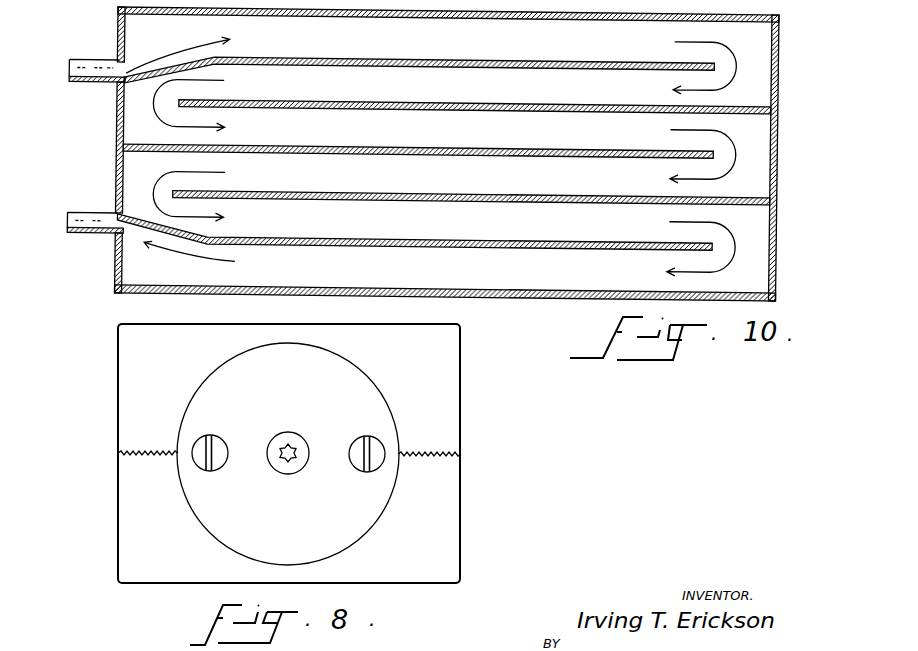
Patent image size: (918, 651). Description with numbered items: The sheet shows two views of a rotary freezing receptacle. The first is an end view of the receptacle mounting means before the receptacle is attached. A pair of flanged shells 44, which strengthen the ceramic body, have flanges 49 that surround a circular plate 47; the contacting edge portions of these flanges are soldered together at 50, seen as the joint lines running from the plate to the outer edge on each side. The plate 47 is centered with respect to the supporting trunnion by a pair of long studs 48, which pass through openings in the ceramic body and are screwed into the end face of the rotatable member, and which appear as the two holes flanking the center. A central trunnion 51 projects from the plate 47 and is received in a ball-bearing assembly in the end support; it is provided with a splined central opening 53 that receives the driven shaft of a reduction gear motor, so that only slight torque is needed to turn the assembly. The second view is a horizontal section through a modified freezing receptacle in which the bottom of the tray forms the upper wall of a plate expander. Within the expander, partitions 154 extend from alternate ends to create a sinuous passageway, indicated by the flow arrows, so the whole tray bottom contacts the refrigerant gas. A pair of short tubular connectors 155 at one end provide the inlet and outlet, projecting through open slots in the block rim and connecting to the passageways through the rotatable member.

In FIG. 10, the partitions 154 is at (548, 100).
In FIG. 10, the tubular connectors 155 is at (88, 84).
In FIG. 8, the flanged shells 44 is at (447, 419).
In FIG. 8, the circular plate 47 is at (358, 521).
In FIG. 8, the long studs 48 is at (223, 440).
In FIG. 8, the flanges 49 is at (167, 380).
In FIG. 8, the soldered edge portions 50 is at (155, 457).
In FIG. 8, the central trunnion 51 is at (288, 432).
In FIG. 8, the splined central opening 53 is at (281, 461).